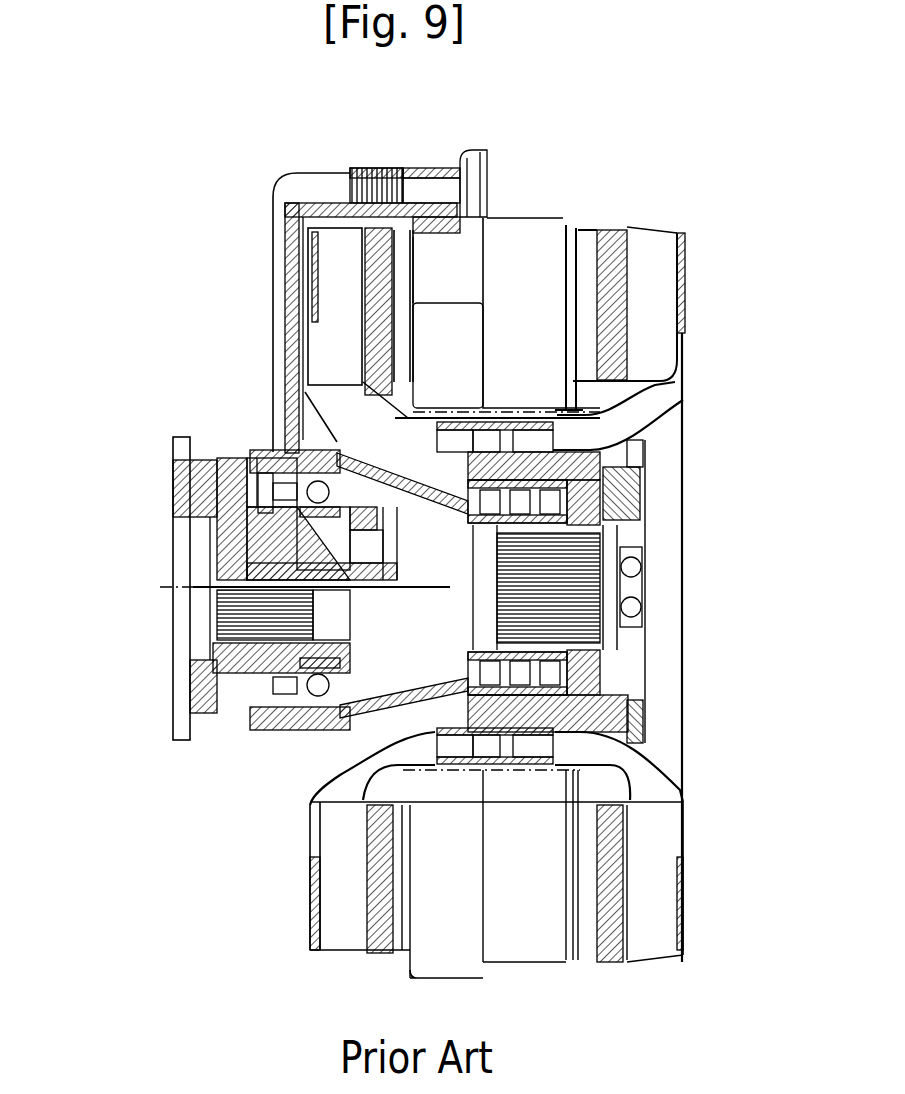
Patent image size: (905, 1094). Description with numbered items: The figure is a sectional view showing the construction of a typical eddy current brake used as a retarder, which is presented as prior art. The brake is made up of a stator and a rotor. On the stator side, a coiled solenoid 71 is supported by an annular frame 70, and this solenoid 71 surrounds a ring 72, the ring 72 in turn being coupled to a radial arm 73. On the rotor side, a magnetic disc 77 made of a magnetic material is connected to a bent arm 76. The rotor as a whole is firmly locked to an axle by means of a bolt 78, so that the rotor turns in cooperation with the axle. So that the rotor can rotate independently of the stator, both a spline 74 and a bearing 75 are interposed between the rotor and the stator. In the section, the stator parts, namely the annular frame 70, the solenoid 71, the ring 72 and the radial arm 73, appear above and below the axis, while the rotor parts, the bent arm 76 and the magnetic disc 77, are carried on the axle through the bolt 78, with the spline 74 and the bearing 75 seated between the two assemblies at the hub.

The annular frame 70 is at (268, 252).
The coiled solenoid 71 is at (515, 237).
The ring 72 is at (418, 288).
The radial arm 73 is at (280, 298).
The spline 74 is at (498, 488).
The bearing 75 is at (312, 470).
The bent arm 76 is at (305, 380).
The magnetic disc 77 is at (360, 257).
The bolt 78 is at (640, 594).